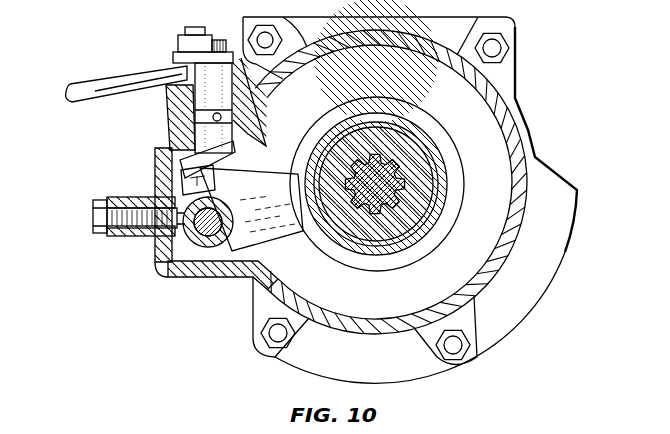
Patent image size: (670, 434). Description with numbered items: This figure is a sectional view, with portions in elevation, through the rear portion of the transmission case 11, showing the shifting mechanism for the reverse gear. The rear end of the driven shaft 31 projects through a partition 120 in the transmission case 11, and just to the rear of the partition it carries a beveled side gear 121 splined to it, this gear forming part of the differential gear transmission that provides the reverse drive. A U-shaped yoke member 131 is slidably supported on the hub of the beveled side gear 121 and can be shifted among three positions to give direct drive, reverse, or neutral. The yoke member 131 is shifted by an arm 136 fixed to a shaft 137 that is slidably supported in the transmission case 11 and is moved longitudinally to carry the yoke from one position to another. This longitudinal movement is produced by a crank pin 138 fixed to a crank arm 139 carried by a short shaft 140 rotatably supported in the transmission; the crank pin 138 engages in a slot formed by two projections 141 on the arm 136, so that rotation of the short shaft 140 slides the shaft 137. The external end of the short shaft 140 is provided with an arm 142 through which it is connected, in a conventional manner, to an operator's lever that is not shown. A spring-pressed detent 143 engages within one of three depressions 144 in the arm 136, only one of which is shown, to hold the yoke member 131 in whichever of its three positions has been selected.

The transmission case 11 is at (522, 130).
The driven shaft 31 is at (405, 195).
The partition 120 is at (468, 112).
The beveled side gear 121 is at (430, 182).
The U-shaped yoke member 131 is at (395, 127).
The arm 136 is at (277, 232).
The shaft 137 is at (208, 248).
The crank pin 138 is at (203, 180).
The crank arm 139 is at (218, 152).
The short shaft 140 is at (196, 98).
The projections 141 is at (167, 180).
The arm 142 is at (138, 78).
The spring-pressed detent 143 is at (157, 237).
The depressions 144 is at (163, 274).